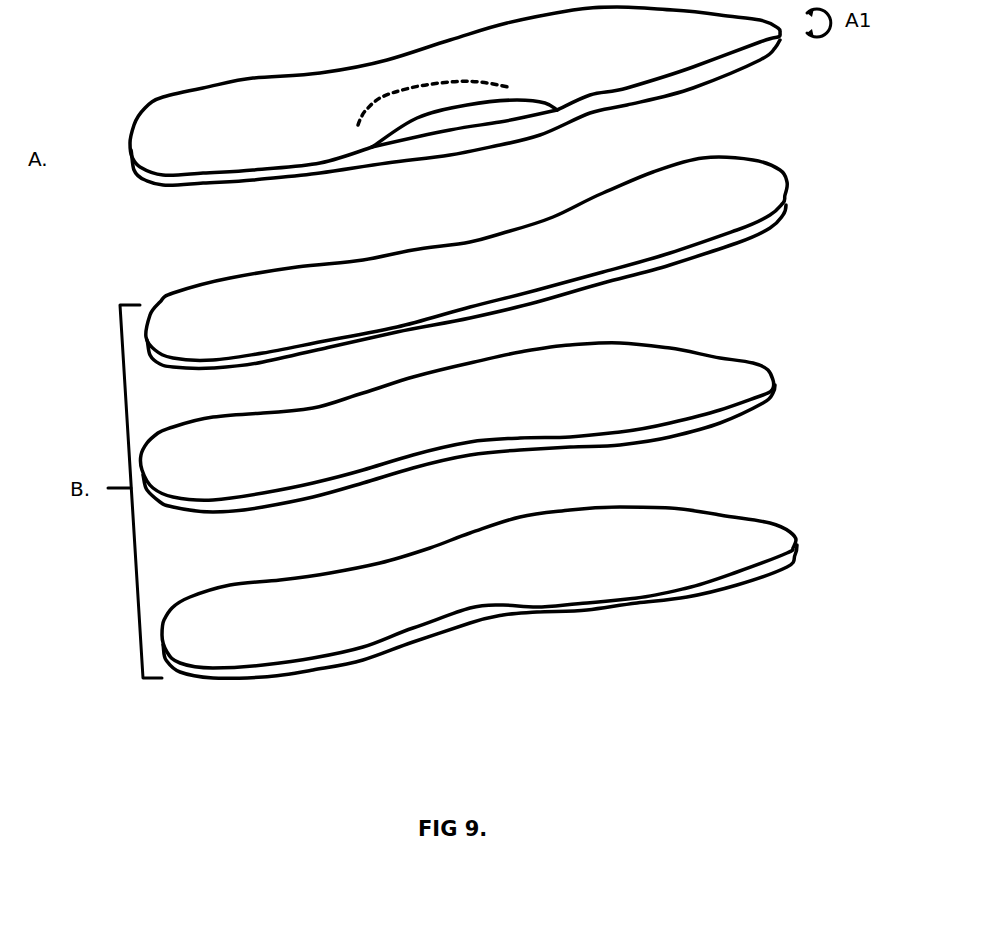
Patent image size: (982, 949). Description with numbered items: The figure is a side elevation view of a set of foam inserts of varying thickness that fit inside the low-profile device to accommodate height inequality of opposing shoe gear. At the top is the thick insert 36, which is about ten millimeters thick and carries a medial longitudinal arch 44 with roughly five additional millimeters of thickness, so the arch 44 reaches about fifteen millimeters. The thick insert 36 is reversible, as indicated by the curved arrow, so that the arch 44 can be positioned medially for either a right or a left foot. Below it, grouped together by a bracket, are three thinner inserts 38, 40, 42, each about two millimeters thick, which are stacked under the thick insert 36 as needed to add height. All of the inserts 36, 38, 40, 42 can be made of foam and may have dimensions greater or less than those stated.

The thick insert 36 is at (250, 72).
The thinner insert 38 is at (743, 248).
The thinner insert 40 is at (770, 398).
The thinner insert 42 is at (782, 560).
The medial longitudinal arch 44 is at (510, 119).